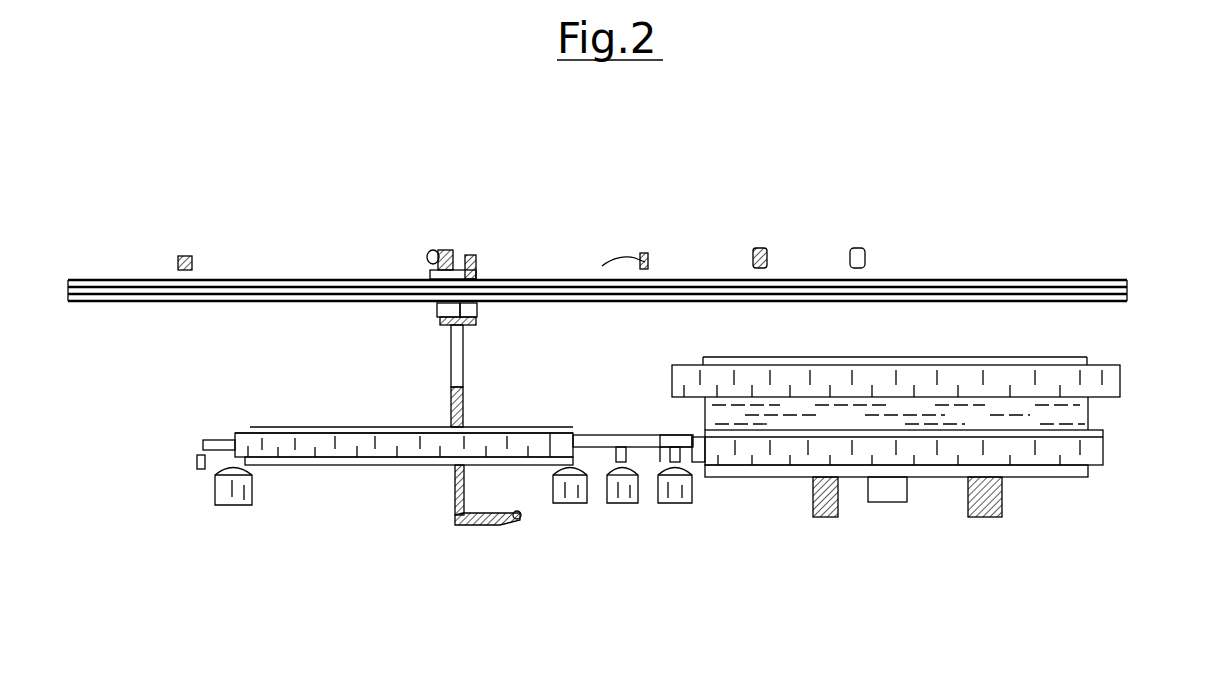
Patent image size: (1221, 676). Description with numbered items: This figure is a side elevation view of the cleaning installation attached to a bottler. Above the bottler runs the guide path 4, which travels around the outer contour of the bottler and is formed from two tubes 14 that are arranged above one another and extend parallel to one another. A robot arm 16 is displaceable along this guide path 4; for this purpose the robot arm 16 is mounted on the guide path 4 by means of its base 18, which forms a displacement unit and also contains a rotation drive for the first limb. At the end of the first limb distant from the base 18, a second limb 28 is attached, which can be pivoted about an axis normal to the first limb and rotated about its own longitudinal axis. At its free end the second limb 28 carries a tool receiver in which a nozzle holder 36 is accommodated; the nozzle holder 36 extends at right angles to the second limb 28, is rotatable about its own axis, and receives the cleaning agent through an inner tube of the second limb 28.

The guide path 4 is at (352, 282).
The tubes 14 is at (233, 284).
The robot arm 16 is at (463, 375).
The base 18 is at (478, 310).
The second limb 28 is at (472, 528).
The nozzle holder 36 is at (524, 513).